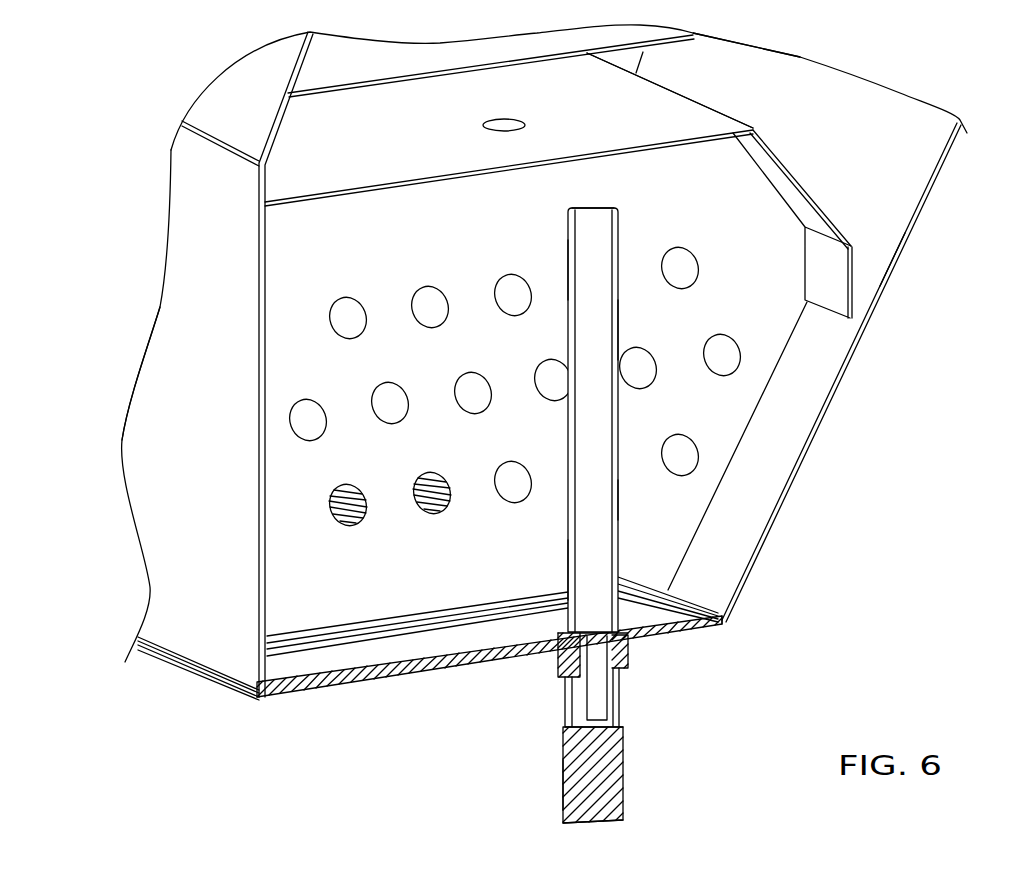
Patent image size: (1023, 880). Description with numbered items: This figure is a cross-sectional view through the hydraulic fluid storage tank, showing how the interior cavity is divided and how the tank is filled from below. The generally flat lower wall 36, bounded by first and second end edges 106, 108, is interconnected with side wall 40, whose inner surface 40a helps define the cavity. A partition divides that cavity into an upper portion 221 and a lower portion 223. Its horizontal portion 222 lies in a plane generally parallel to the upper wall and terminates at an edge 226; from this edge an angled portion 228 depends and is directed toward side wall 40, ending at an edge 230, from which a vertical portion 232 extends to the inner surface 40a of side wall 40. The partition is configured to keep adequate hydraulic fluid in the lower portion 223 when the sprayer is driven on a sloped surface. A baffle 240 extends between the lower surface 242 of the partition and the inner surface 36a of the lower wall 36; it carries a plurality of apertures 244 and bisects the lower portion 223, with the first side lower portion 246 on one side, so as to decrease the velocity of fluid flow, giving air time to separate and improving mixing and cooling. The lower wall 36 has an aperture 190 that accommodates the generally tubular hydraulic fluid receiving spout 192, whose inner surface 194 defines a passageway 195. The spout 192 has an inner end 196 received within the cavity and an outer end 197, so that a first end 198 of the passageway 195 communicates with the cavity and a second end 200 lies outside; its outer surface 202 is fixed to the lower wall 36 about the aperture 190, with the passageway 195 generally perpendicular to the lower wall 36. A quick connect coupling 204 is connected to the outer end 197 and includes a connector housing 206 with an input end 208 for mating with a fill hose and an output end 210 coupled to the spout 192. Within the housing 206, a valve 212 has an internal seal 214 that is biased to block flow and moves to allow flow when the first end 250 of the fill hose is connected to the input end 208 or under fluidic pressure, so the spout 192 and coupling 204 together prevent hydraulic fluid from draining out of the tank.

The first end of fill hose 250 is at (715, 100).
The edge of horizontal portion 226 is at (753, 128).
The upper portion of cavity 221 is at (886, 179).
The angled portion of partition 228 is at (833, 213).
The side wall 40 is at (893, 252).
The edge of angled portion 230 is at (895, 256).
The vertical portion of partition 232 is at (828, 283).
The lower portion of cavity 223 is at (780, 279).
The inner surface of side wall 40a is at (777, 489).
The horizontal portion of partition 222 is at (420, 173).
The lower surface of partition 242 is at (327, 200).
The first end of passageway 198 is at (583, 217).
The passageway 195 is at (603, 210).
The inner end of spout 196 is at (557, 264).
The inner surface of spout 194 is at (614, 332).
The baffle 240 is at (287, 315).
The apertures 244 is at (427, 310).
The outer surface of spout 202 is at (567, 558).
The hydraulic fluid receiving spout 192 is at (623, 496).
The internal seal 214 is at (593, 633).
The second end of passageway 200 is at (600, 628).
The first side lower portion 246 is at (420, 589).
The inner surface of lower wall 36a is at (327, 663).
The lower wall 36 is at (358, 680).
The second end edge of lower wall 108 is at (253, 697).
The first end edge of lower wall 106 is at (722, 622).
The outer end of spout 197 is at (622, 612).
The aperture 190 is at (560, 653).
The output end of connector housing 210 is at (624, 647).
The valve 212 is at (597, 688).
The quick connect coupling 204 is at (637, 728).
The connector housing 206 is at (547, 793).
The input end of connector housing 208 is at (615, 833).